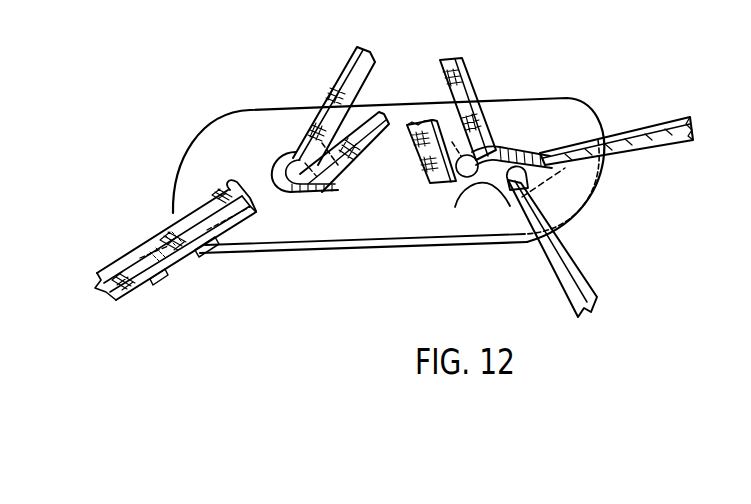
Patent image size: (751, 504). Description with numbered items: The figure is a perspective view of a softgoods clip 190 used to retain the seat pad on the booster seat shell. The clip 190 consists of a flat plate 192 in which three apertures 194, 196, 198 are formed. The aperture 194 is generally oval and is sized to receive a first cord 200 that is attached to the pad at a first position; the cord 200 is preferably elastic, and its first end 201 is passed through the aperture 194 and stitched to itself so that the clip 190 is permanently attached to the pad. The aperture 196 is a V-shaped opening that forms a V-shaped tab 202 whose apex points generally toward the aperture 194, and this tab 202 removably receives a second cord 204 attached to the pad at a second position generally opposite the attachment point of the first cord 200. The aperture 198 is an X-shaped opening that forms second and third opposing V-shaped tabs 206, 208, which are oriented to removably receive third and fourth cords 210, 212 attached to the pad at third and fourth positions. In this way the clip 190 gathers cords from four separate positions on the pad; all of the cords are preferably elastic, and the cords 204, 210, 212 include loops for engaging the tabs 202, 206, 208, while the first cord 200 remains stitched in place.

The softgoods clip 190 is at (586, 93).
The flat plate 192 is at (417, 250).
The aperture 194 is at (231, 187).
The aperture 196 is at (300, 189).
The aperture 198 is at (497, 148).
The first cord 200 is at (146, 281).
The first end 201 is at (192, 255).
The V-shaped tab 202 is at (294, 158).
The second cord 204 is at (346, 76).
The second V-shaped tab 206 is at (465, 195).
The third V-shaped tab 208 is at (511, 196).
The third cord 210 is at (470, 80).
The fourth cord 212 is at (568, 277).